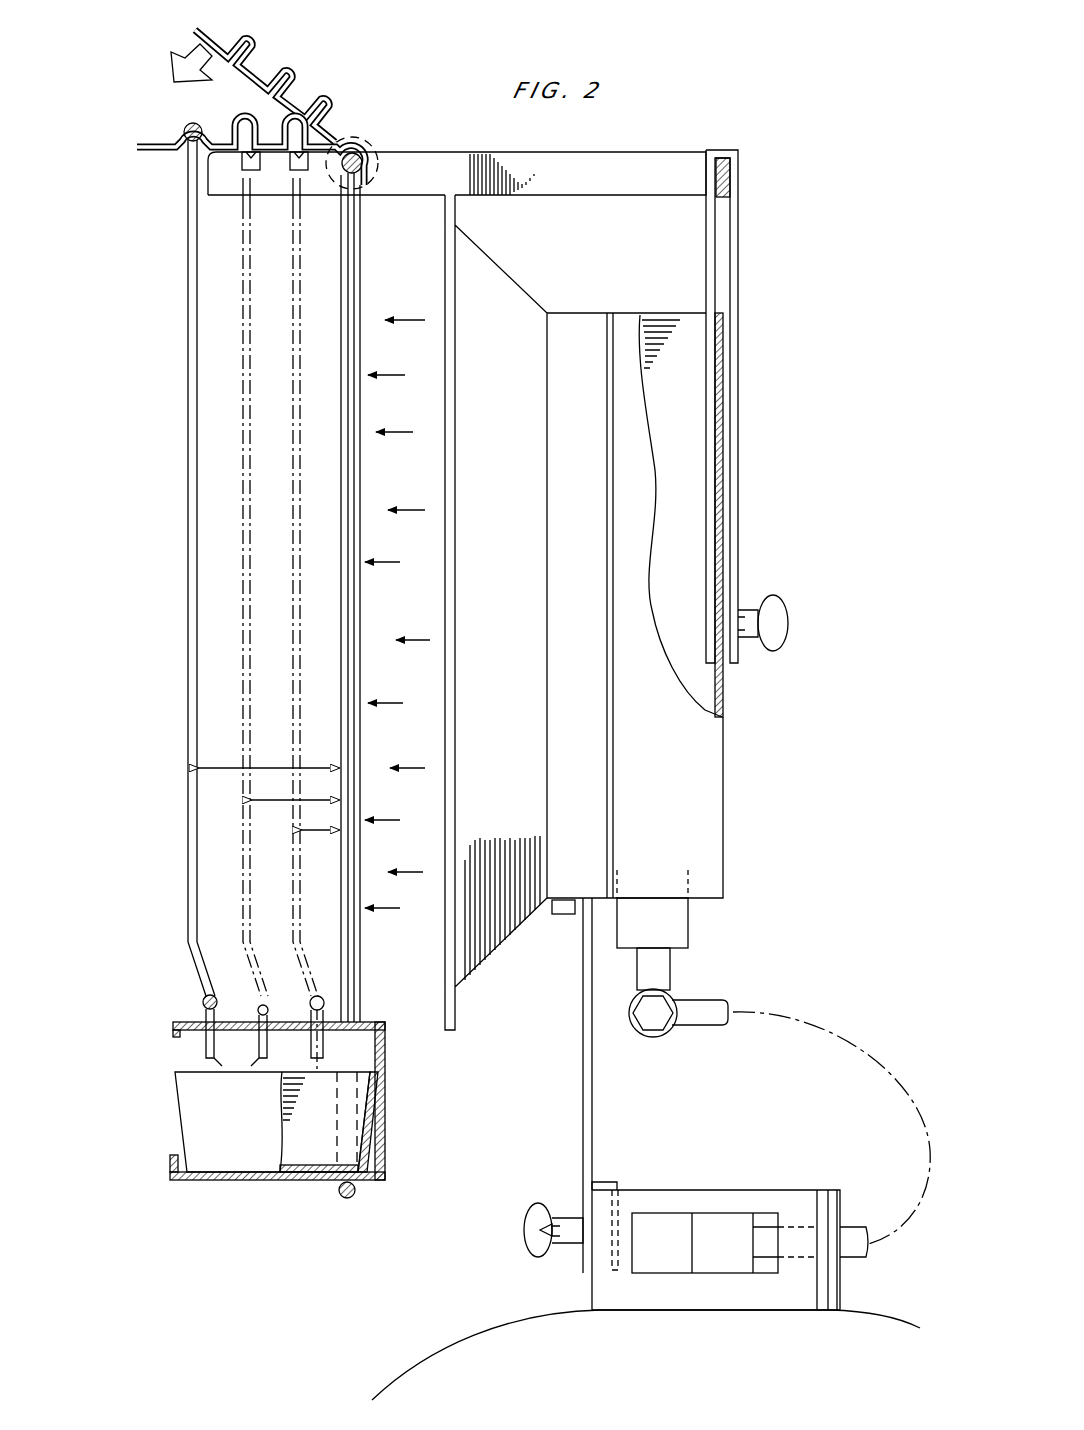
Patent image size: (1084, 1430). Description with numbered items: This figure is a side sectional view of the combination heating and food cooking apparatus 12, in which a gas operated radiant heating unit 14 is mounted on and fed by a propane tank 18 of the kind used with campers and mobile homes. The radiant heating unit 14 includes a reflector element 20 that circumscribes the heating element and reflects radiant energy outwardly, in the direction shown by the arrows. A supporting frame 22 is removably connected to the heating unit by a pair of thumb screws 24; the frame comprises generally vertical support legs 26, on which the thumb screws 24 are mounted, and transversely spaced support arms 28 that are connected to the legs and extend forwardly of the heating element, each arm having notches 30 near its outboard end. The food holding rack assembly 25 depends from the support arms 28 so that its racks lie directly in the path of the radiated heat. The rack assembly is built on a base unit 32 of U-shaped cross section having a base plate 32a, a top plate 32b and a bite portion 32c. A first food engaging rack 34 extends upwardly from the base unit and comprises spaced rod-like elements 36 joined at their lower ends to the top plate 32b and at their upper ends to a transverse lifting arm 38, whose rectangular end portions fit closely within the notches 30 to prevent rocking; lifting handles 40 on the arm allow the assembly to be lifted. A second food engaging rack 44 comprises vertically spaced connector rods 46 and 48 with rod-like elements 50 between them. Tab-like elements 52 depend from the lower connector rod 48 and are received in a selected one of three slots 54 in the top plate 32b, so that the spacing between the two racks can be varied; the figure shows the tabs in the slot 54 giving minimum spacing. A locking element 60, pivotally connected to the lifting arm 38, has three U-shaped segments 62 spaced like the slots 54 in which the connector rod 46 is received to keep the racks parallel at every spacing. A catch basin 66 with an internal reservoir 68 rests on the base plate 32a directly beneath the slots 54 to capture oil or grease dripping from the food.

The combination heating and food cooking apparatus 12 is at (802, 190).
The radiant heating unit 14 is at (726, 790).
The propane tank 18 is at (492, 1340).
The reflector element 20 is at (488, 270).
The supporting frame 22 is at (604, 150).
The thumb screws 24 is at (790, 624).
The food holding rack assembly 25 is at (170, 553).
The support elements or legs 26 is at (740, 284).
The support arms 28 is at (440, 158).
The notches 30 is at (296, 162).
The base unit 32 is at (324, 1103).
The base plate 32a is at (248, 1180).
The top plate 32b is at (366, 1022).
The bite portion 32c is at (385, 1144).
The first food engaging rack 34 is at (346, 605).
The rod-like elements 36 is at (350, 668).
The lifting arm 38 is at (362, 168).
The lifting handles 40 is at (372, 140).
The second food engaging rack 44 is at (188, 798).
The connector rod 46 is at (184, 128).
The connector rod 48 is at (203, 1001).
The rod-like elements 50 is at (188, 676).
The tab-like elements 52 is at (260, 1060).
The slots 54 is at (204, 1032).
The locking element 60 is at (282, 52).
The U-shaped segments 62 is at (330, 146).
The catch basin 66 is at (190, 1124).
The internal reservoir 68 is at (300, 1154).